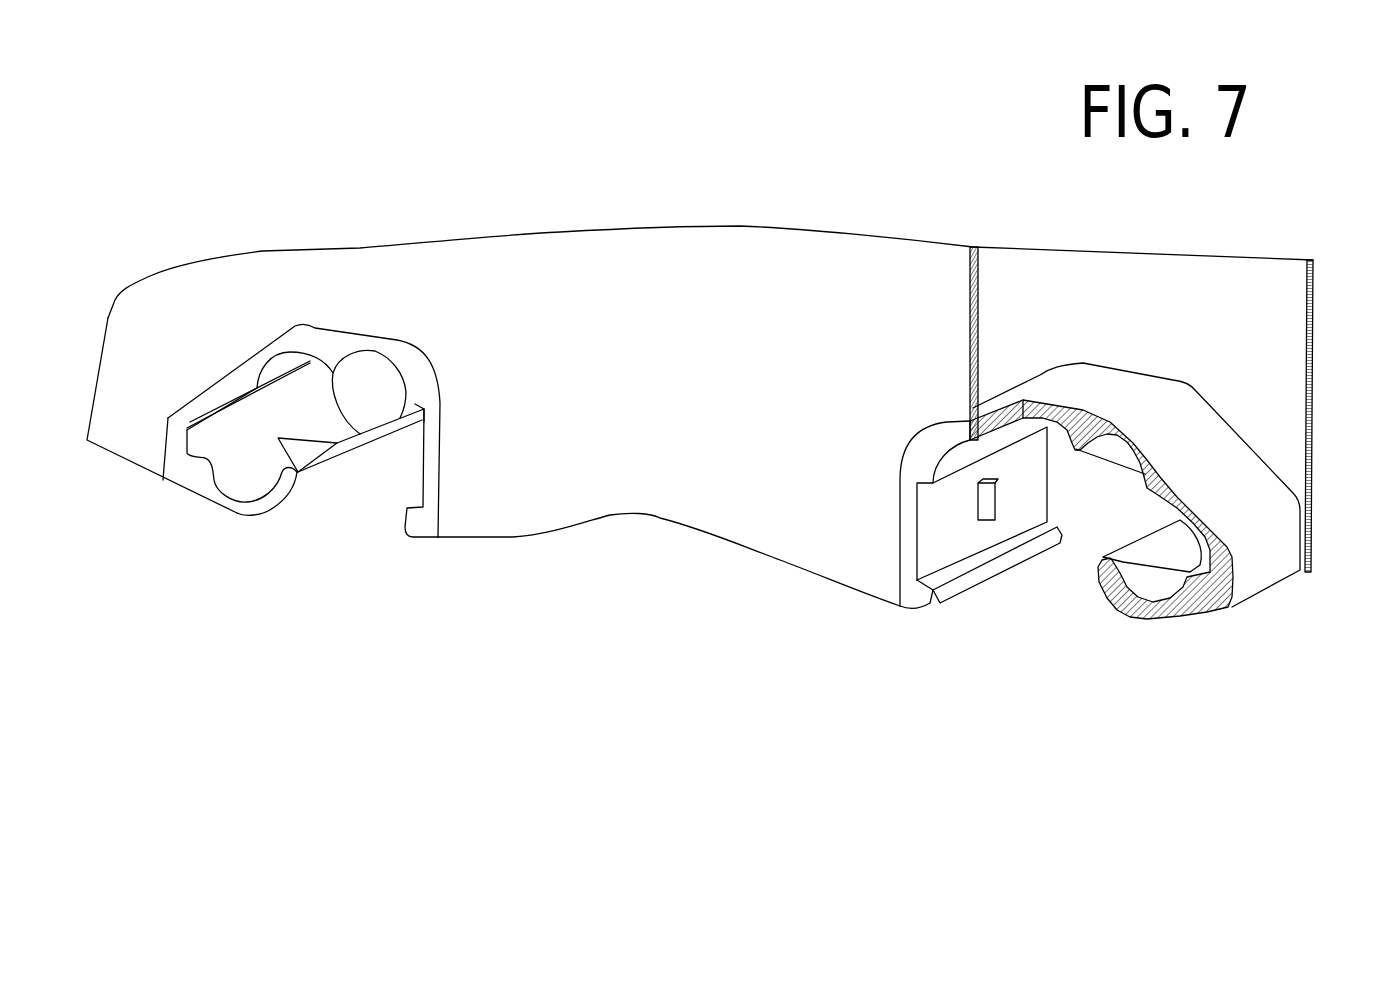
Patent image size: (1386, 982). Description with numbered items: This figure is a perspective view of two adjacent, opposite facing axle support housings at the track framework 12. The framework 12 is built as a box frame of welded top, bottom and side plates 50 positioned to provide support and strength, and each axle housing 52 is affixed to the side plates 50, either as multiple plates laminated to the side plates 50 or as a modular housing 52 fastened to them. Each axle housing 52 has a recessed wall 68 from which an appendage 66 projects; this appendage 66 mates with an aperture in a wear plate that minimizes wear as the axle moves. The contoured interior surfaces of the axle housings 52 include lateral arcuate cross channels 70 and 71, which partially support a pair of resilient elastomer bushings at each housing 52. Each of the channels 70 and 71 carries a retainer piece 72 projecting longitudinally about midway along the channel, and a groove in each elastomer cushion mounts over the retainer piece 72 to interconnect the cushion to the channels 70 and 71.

The framework 12 is at (657, 565).
The side plates 50 is at (560, 528).
The axle housings 52 is at (1280, 617).
The appendage 66 is at (988, 513).
The recessed wall 68 is at (423, 483).
The lateral arcuate cross channel 70 is at (303, 355).
The lateral arcuate cross channel 71 is at (248, 502).
The retainer piece 72 is at (297, 445).